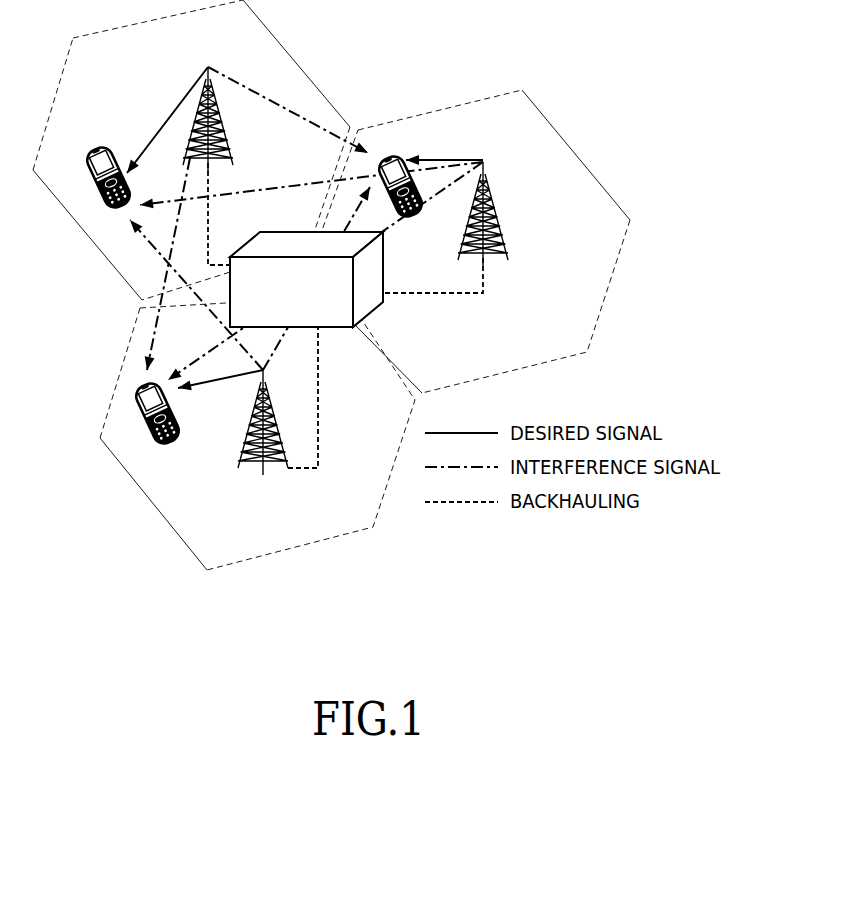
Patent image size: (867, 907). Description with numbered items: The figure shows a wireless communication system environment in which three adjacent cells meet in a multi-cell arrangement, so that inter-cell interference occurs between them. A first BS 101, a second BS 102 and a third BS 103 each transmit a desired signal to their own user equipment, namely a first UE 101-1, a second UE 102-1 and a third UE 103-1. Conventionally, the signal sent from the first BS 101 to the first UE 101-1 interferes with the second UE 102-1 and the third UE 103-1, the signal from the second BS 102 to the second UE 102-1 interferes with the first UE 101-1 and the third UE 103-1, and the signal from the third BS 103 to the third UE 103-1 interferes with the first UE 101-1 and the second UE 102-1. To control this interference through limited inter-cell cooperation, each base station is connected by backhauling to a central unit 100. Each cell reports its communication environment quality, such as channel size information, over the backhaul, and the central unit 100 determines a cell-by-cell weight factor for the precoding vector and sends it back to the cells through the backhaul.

The central unit 100 is at (306, 279).
The first BS 101 is at (235, 119).
The first UE 101-1 is at (100, 150).
The second BS 102 is at (510, 225).
The second UE 102-1 is at (414, 212).
The third BS 103 is at (265, 452).
The third UE 103-1 is at (173, 438).